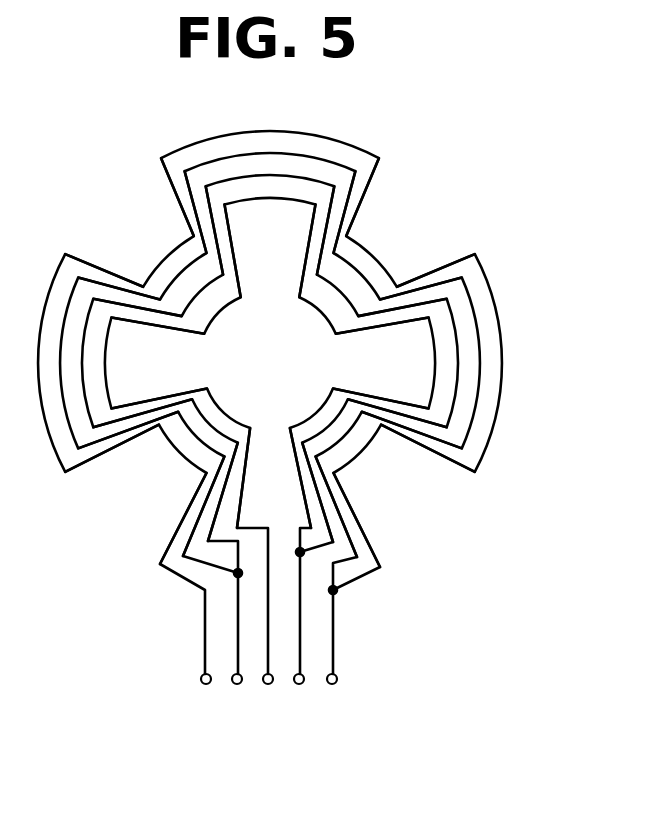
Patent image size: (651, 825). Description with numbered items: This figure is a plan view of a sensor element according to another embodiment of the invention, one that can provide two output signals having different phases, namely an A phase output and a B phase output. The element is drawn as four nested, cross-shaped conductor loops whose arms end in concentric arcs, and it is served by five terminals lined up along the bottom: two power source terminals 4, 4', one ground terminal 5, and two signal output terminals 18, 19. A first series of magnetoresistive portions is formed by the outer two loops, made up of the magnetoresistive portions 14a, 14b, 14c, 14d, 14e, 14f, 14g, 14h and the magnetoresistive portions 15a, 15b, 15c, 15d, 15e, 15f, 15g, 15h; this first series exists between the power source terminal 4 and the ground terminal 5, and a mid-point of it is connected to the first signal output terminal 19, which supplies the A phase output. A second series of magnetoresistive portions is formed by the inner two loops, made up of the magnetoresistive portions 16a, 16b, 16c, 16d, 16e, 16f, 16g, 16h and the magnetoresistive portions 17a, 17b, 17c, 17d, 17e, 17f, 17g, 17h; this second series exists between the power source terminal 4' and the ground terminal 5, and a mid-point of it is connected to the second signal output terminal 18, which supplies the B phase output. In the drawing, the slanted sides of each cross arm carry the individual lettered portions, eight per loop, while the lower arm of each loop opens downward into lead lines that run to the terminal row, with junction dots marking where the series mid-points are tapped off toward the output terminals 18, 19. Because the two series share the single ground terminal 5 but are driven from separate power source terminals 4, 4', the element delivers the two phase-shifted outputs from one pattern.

The power source terminal 4 is at (199, 711).
The ground terminal 5 is at (237, 684).
The power source terminal 4' is at (274, 711).
The signal output terminal 18 is at (299, 684).
The signal output terminal 19 is at (332, 684).
The magnetoresistive portion 14a is at (76, 472).
The magnetoresistive portion 14b is at (72, 254).
The magnetoresistive portion 14c is at (159, 160).
The magnetoresistive portion 14d is at (381, 158).
The magnetoresistive portion 14e is at (470, 252).
The magnetoresistive portion 14f is at (472, 476).
The magnetoresistive portion 14g is at (384, 567).
The magnetoresistive portion 14h is at (165, 561).
The magnetoresistive portion 15a is at (456, 446).
The magnetoresistive portion 15b is at (454, 279).
The magnetoresistive portion 15c is at (350, 190).
The magnetoresistive portion 15d is at (193, 200).
The magnetoresistive portion 15e is at (96, 283).
The magnetoresistive portion 15f is at (95, 443).
The magnetoresistive portion 15g is at (185, 554).
The magnetoresistive portion 15h is at (356, 553).
The magnetoresistive portion 16a is at (112, 422).
The magnetoresistive portion 16b is at (128, 305).
The magnetoresistive portion 16c is at (215, 232).
The magnetoresistive portion 16d is at (329, 212).
The magnetoresistive portion 16e is at (428, 303).
The magnetoresistive portion 16f is at (425, 421).
The magnetoresistive portion 16g is at (328, 527).
The magnetoresistive portion 16h is at (213, 527).
The magnetoresistive portion 17a is at (400, 403).
The magnetoresistive portion 17b is at (400, 322).
The magnetoresistive portion 17c is at (309, 240).
The magnetoresistive portion 17d is at (232, 250).
The magnetoresistive portion 17e is at (150, 324).
The magnetoresistive portion 17f is at (130, 404).
The magnetoresistive portion 17g is at (241, 497).
The magnetoresistive portion 17h is at (304, 497).